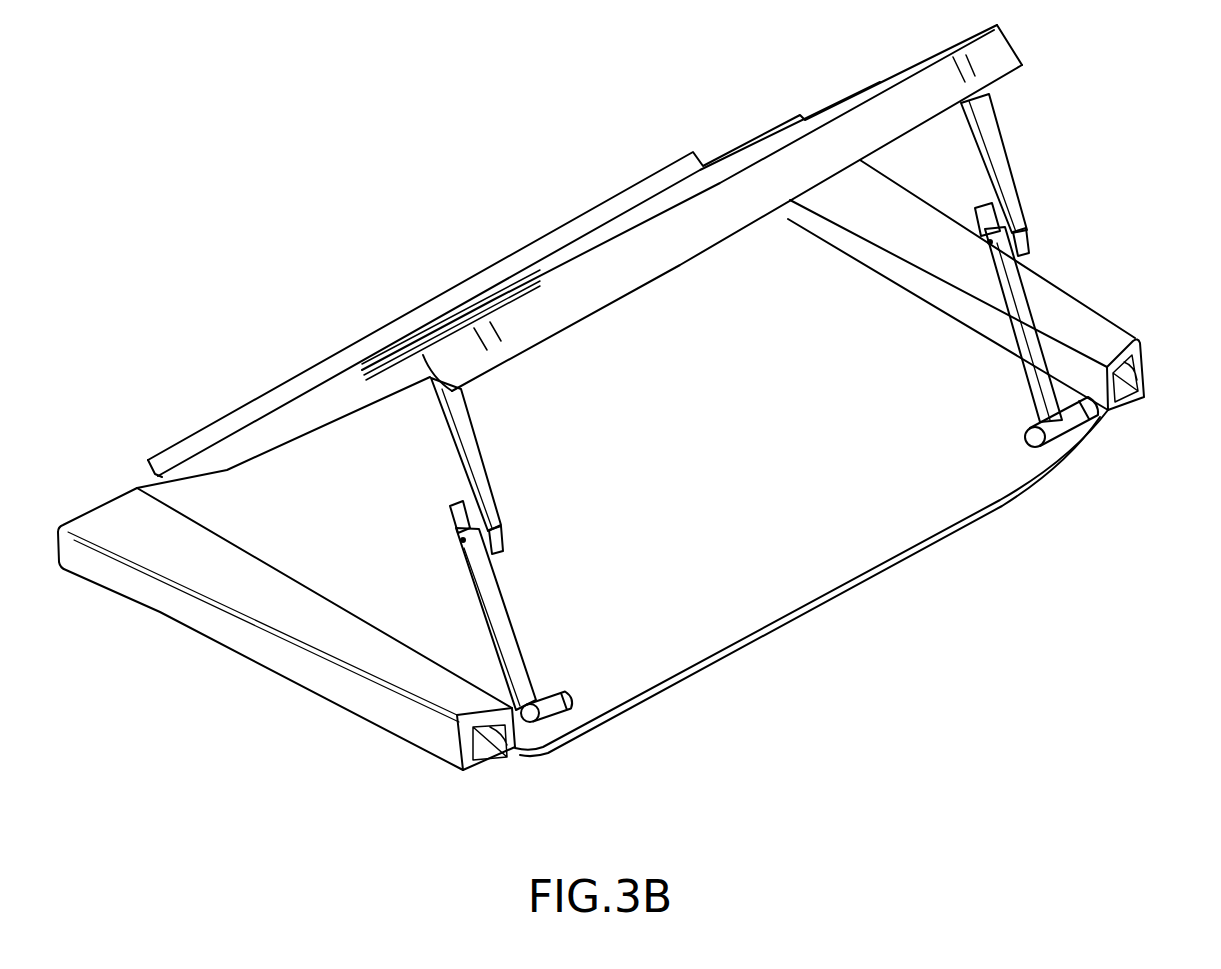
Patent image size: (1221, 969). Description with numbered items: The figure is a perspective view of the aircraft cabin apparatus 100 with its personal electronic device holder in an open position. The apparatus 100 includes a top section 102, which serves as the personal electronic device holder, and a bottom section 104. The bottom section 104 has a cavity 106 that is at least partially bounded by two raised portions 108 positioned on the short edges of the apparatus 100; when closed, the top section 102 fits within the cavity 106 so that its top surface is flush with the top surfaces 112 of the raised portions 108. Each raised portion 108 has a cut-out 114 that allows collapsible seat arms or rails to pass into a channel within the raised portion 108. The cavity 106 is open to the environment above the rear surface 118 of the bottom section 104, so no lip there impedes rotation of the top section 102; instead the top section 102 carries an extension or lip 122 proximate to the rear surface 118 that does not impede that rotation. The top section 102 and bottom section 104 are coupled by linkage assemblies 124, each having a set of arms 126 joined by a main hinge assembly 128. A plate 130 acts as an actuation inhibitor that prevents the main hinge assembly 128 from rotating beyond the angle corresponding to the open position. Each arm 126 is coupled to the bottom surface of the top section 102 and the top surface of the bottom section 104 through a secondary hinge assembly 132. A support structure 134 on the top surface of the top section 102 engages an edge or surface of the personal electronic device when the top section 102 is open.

The apparatus 100 is at (210, 143).
The top section 102 is at (402, 262).
The bottom section 104 is at (866, 659).
The cavity 106 is at (683, 633).
The raised portions 108 is at (220, 653).
The top surfaces 112 is at (143, 550).
The cut-out 114 is at (487, 750).
The rear surface 118 is at (1010, 493).
The extension or lip 122 is at (1003, 70).
The linkage assembly 124 is at (1082, 203).
The arms 126 is at (477, 448).
The main hinge assembly 128 is at (502, 528).
The plate 130 is at (457, 502).
The secondary hinge assembly 132 is at (420, 412).
The support structure 134 is at (203, 425).